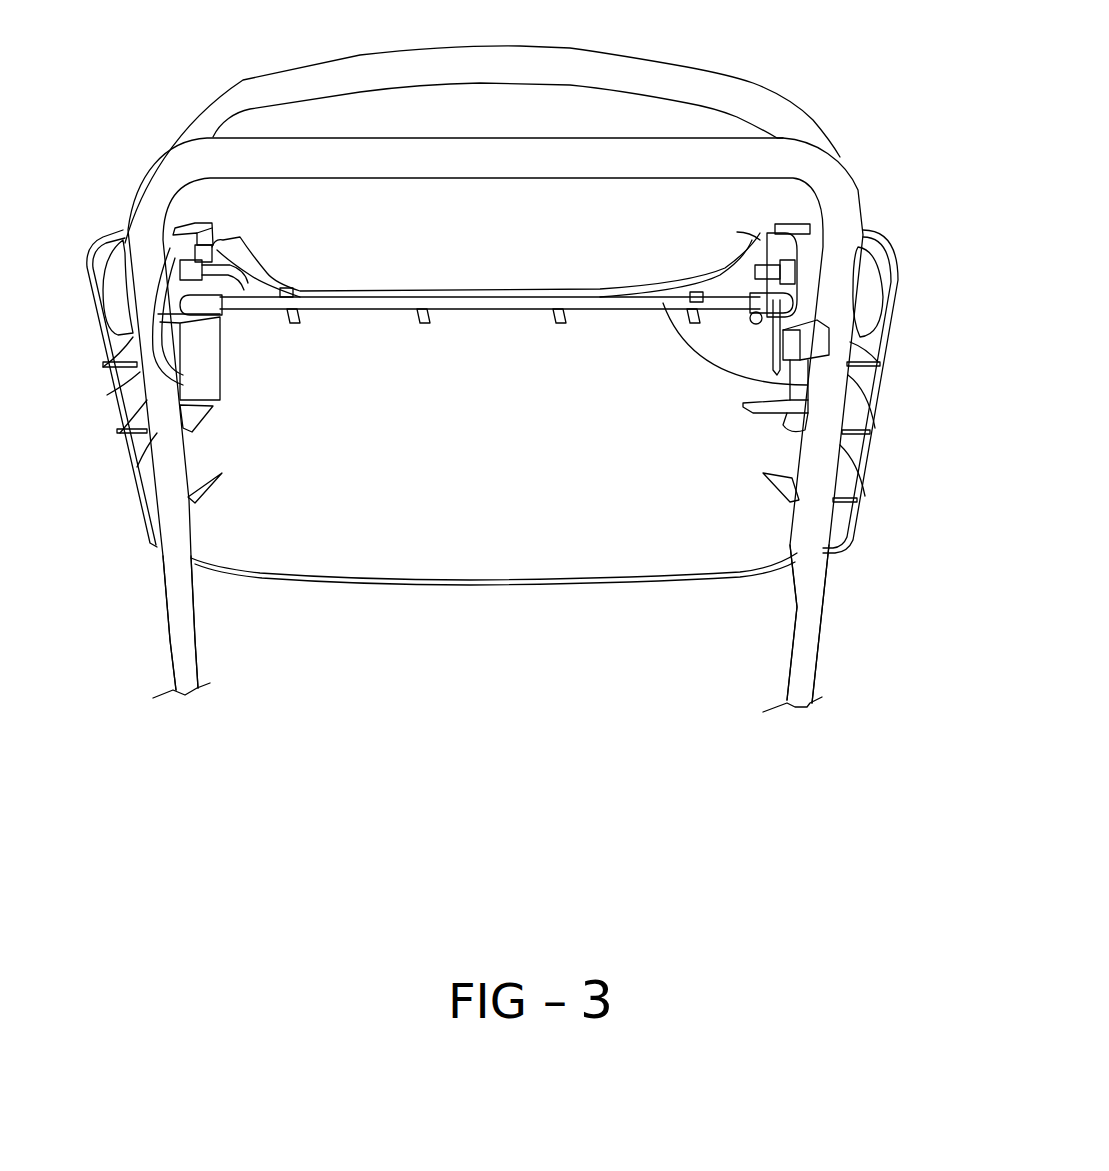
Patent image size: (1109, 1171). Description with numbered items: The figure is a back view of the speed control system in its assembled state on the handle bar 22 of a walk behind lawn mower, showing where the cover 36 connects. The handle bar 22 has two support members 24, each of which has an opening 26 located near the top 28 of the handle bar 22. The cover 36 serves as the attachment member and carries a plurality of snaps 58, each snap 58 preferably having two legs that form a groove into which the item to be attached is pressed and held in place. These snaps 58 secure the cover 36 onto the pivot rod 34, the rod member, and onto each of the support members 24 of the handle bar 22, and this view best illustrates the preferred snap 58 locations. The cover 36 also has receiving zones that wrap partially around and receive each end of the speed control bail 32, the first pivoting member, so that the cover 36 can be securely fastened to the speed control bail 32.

The handle bar 22 is at (515, 370).
The support members 24 is at (175, 643).
The opening 26 is at (887, 353).
The top 28 is at (865, 197).
The speed control bail 32 is at (753, 88).
The pivot rod 34 is at (807, 385).
The cover 36 is at (594, 547).
The snap 58 is at (690, 308).